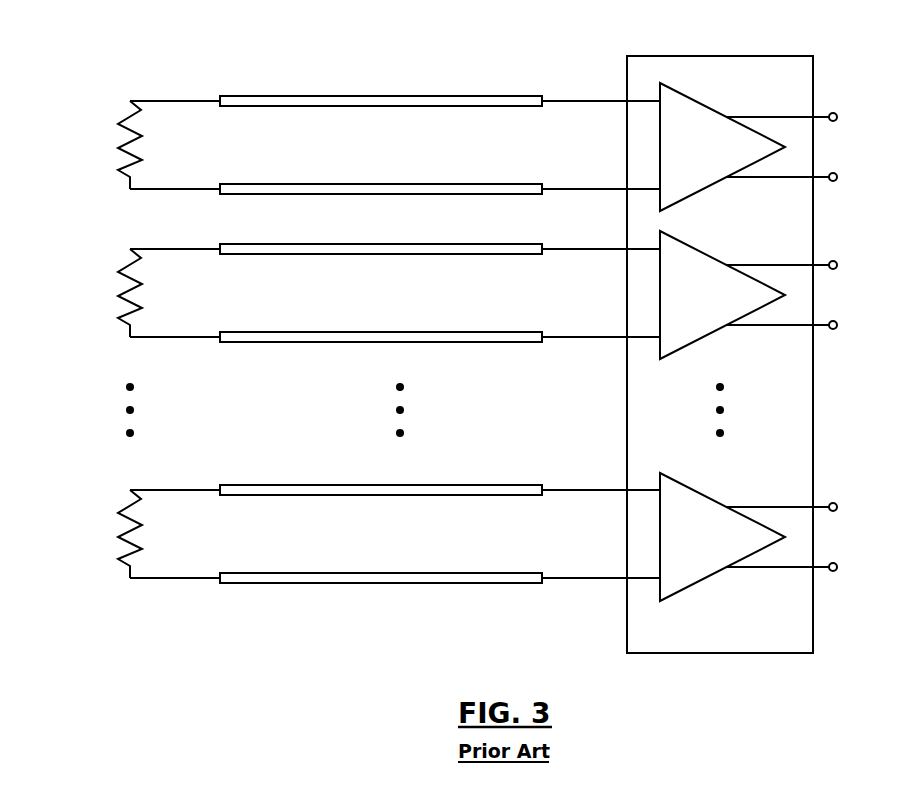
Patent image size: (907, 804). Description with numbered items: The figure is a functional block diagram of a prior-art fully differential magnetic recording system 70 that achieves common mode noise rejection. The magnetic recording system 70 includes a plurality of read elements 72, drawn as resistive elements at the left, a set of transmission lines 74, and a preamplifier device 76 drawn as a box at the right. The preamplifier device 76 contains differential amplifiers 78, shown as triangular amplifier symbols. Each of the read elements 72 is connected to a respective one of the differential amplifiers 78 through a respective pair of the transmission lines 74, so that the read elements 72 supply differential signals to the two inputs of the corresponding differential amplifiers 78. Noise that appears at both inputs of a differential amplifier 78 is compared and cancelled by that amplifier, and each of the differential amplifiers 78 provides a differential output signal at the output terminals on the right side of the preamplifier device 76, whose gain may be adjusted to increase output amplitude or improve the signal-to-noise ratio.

The fully differential magnetic recording system 70 is at (203, 61).
The read element 72 is at (138, 147).
The transmission line 74 is at (466, 96).
The preamplifier device 76 is at (813, 85).
The differential amplifier 78 is at (700, 104).